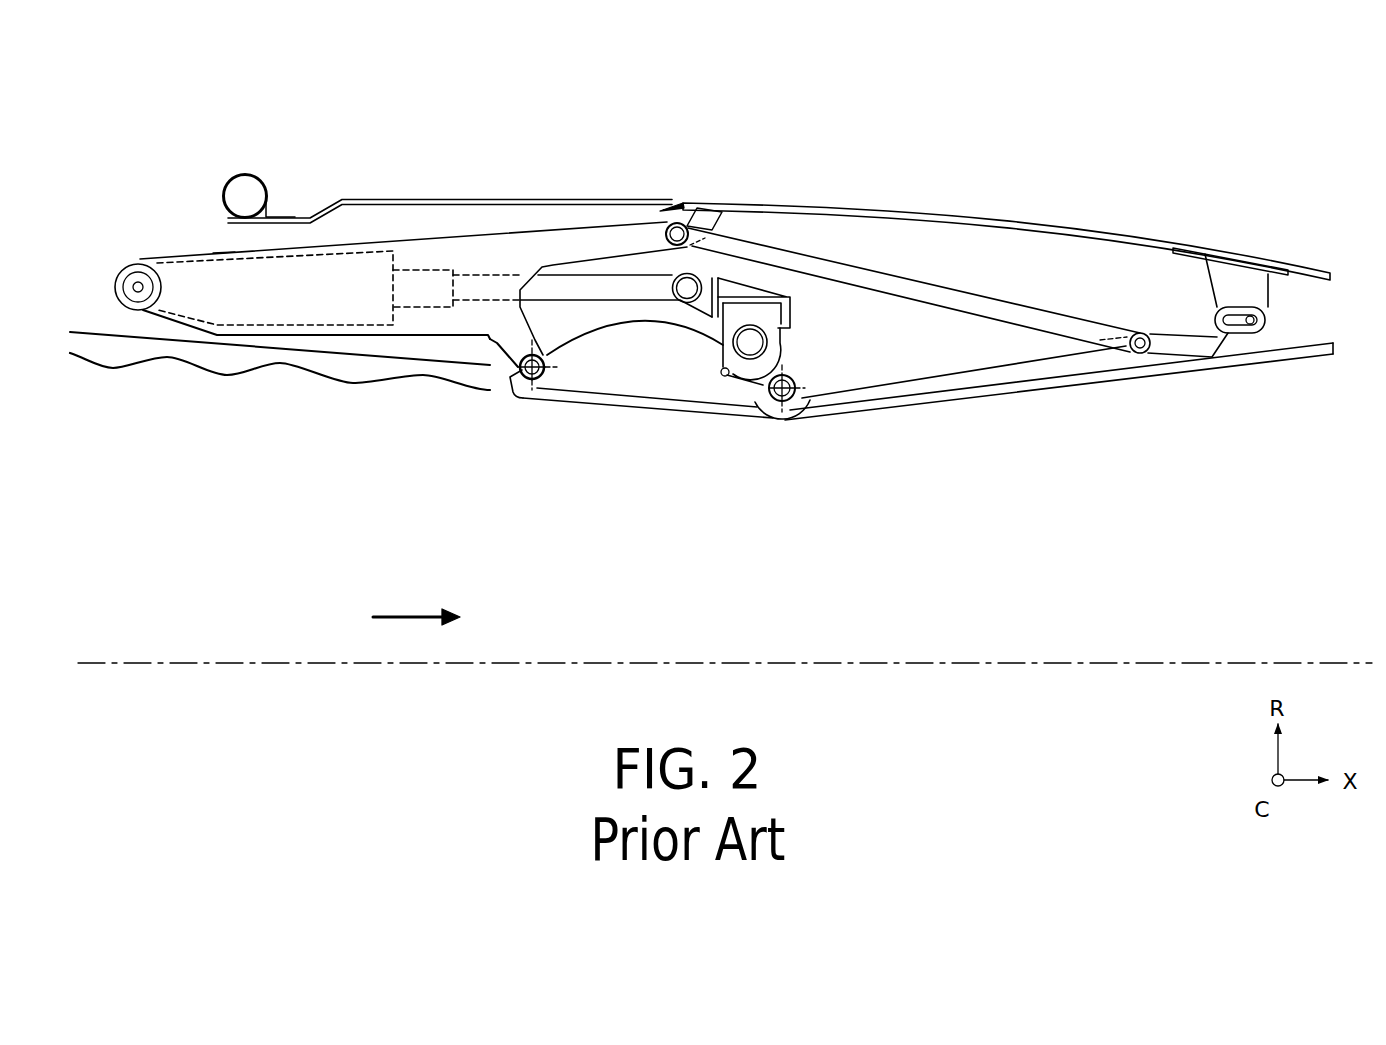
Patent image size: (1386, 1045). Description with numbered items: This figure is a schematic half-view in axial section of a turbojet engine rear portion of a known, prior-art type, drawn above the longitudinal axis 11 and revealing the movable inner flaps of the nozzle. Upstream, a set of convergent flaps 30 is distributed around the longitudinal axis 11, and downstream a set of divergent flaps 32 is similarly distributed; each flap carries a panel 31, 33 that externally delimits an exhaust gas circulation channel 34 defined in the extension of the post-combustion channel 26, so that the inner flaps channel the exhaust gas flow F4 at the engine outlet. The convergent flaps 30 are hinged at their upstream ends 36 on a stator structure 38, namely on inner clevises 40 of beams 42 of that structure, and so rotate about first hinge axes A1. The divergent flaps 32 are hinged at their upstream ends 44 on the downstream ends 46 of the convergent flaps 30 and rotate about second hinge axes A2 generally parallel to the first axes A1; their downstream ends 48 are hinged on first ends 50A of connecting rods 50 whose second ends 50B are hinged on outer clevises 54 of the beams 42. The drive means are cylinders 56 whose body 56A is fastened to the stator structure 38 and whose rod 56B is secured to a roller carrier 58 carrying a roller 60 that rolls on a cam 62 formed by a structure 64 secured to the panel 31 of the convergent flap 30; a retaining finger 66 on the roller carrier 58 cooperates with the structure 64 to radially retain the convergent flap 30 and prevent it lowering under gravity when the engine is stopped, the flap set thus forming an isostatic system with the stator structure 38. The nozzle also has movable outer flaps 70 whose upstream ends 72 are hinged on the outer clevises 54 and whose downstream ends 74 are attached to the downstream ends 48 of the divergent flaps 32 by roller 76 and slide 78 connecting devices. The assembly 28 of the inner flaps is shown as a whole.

The longitudinal axis 11 is at (1052, 660).
The post-combustion channel 26 is at (158, 491).
The lower arm assembly 28 is at (918, 448).
The convergent flaps 30 is at (660, 413).
The panel 31 is at (727, 412).
The divergent flaps 32 is at (1037, 393).
The panel 33 is at (1103, 377).
The exhaust gas circulation channel 34 is at (854, 577).
The upstream ends of the convergent flaps 36 is at (548, 378).
The stator structure 38 is at (375, 133).
The inner clevises 40 is at (515, 343).
The beams 42 is at (430, 237).
The upstream ends of the divergent flaps 44 is at (793, 373).
The downstream ends of the convergent flaps 46 is at (760, 393).
The downstream ends of the divergent flaps 48 is at (1197, 350).
The connecting rods 50 is at (957, 290).
The first ends of the connecting rods 50A is at (1138, 330).
The second ends of the connecting rods 50B is at (697, 202).
The outer clevises 54 is at (640, 240).
The cylinders 56 is at (250, 455).
The body 56A is at (307, 323).
The rod 56B is at (477, 300).
The roller carrier 58 is at (750, 287).
The roller 60 is at (797, 337).
The cam 62 is at (627, 318).
The structure 64 is at (591, 347).
The retaining finger 66 is at (723, 365).
The movable outer flaps 70 is at (1035, 212).
The upstream ends of the outer flaps 72 is at (700, 222).
The downstream ends of the outer flaps 74 is at (1237, 265).
The roller 76 is at (1247, 323).
The slide 78 is at (1227, 303).
The first hinge axes A1 is at (532, 383).
The second hinge axes A2 is at (795, 382).
The exhaust gas flow F4 is at (405, 615).